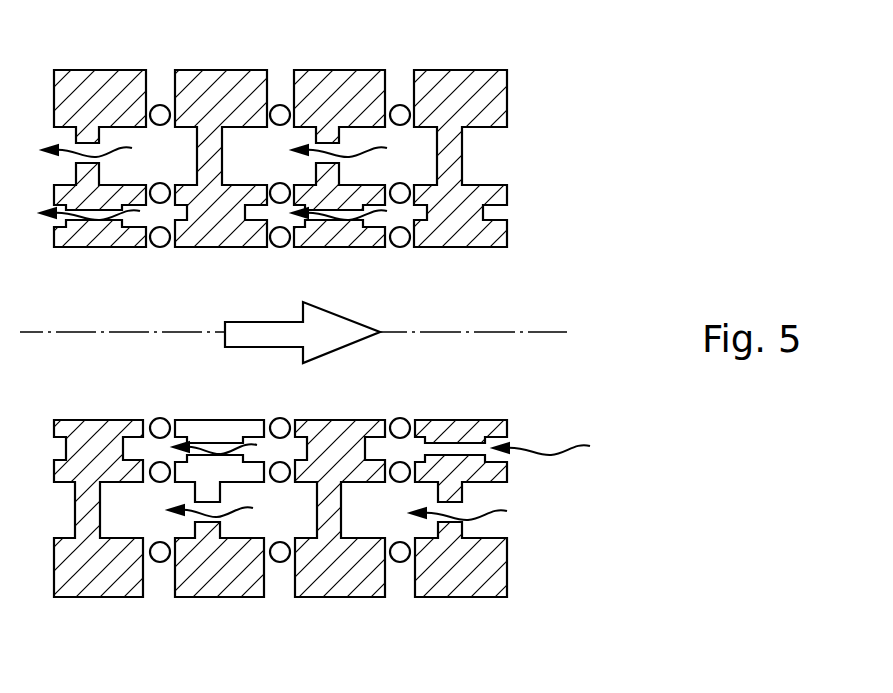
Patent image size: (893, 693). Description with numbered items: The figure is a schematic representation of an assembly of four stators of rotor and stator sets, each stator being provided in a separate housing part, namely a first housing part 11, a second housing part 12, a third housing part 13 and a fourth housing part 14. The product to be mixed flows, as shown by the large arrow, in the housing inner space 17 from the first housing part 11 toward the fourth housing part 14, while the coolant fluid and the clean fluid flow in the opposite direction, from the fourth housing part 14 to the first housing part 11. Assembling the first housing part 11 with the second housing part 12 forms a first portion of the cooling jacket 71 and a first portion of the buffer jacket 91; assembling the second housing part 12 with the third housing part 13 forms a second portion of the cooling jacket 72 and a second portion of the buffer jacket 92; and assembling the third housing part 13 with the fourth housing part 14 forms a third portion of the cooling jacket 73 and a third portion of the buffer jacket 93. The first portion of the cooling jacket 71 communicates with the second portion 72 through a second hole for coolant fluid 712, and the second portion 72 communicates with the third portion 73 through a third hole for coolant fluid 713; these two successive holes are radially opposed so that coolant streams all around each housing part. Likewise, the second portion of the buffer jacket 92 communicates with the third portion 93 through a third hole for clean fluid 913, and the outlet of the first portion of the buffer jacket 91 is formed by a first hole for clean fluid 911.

The first housing part 11 is at (95, 597).
The second housing part 12 is at (248, 597).
The third housing part 13 is at (338, 597).
The fourth housing part 14 is at (448, 597).
The housing inner space 17 is at (183, 366).
The first portion of the cooling jacket 71 is at (168, 522).
The second portion of the cooling jacket 72 is at (290, 522).
The third portion of the cooling jacket 73 is at (408, 522).
The first portion of the buffer jacket 91 is at (176, 459).
The second portion of the buffer jacket 92 is at (296, 459).
The third portion of the buffer jacket 93 is at (416, 459).
The second hole for coolant fluid 712 is at (205, 515).
The third hole for coolant fluid 713 is at (338, 152).
The first hole for clean fluid 911 is at (108, 222).
The third hole for clean fluid 913 is at (358, 215).